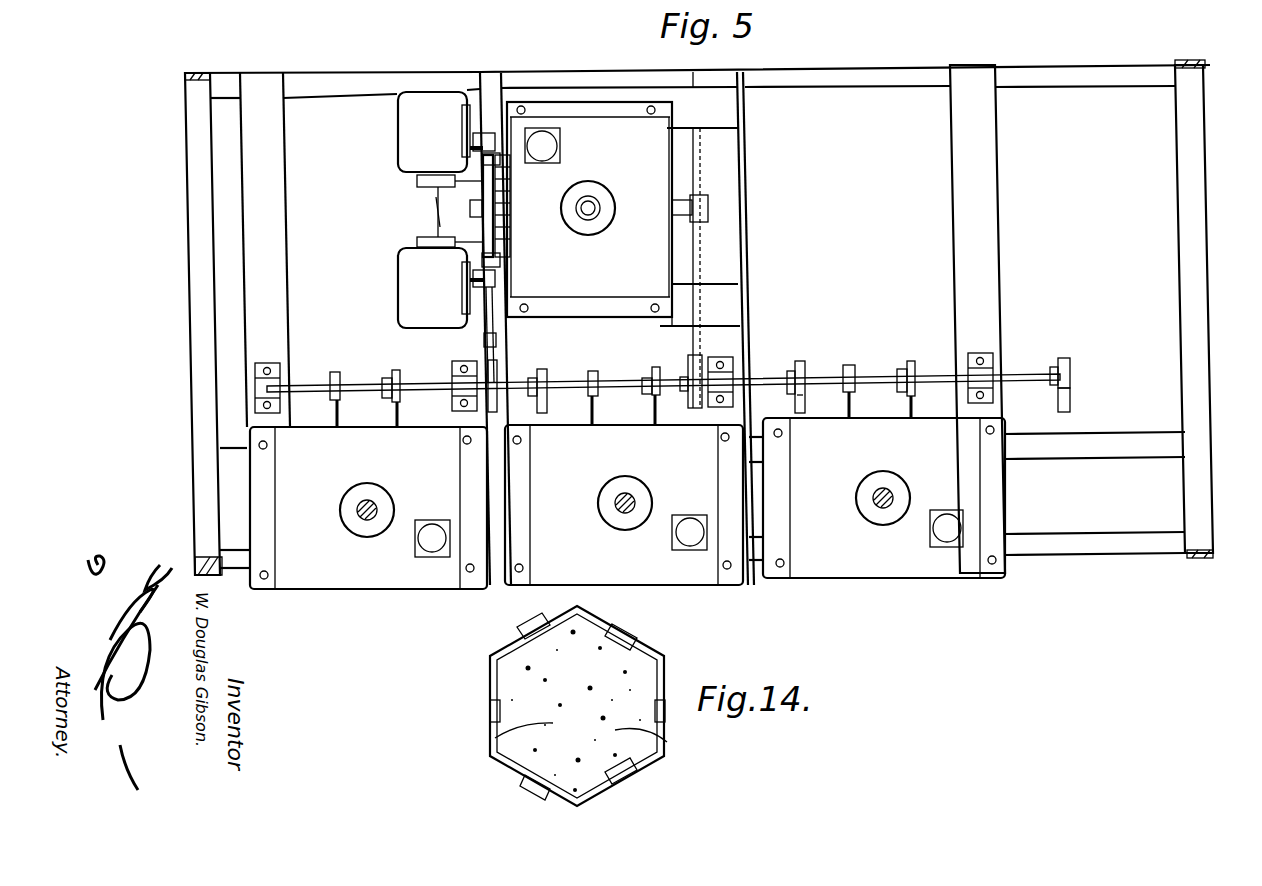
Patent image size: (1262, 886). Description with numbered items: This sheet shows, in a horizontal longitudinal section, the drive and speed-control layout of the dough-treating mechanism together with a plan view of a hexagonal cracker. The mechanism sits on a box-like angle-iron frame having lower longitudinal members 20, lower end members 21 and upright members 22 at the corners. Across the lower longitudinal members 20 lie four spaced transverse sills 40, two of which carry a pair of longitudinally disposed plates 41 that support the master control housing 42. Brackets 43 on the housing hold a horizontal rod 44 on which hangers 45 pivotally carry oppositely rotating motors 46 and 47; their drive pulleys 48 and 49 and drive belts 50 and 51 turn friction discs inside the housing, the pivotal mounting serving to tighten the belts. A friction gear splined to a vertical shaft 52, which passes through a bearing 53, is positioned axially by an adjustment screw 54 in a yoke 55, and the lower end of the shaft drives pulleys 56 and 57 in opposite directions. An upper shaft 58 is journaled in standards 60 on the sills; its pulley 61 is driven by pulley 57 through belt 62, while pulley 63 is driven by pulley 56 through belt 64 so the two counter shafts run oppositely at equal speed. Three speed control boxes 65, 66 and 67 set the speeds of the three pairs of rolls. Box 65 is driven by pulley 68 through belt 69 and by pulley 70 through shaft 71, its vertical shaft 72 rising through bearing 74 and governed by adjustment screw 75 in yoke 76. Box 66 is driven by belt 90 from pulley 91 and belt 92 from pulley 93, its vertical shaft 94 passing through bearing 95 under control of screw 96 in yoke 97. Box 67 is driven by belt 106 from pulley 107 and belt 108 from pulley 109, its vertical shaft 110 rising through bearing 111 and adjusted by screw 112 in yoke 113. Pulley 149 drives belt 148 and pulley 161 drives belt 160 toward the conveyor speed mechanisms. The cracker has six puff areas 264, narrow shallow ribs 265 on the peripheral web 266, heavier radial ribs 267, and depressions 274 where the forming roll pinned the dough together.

In FIG. 5, the lower longitudinal members 20 is at (1078, 84).
In FIG. 5, the lower end members 21 is at (195, 305).
In FIG. 5, the upright members 22 is at (183, 88).
In FIG. 5, the transverse sills 40 is at (283, 151).
In FIG. 5, the plates 41 is at (738, 115).
In FIG. 5, the master control housing 42 is at (663, 124).
In FIG. 5, the brackets 43 is at (493, 155).
In FIG. 5, the horizontal rod 44 is at (496, 232).
In FIG. 5, the hangers 45 is at (483, 133).
In FIG. 5, the motor 46 is at (398, 128).
In FIG. 5, the motor 47 is at (398, 287).
In FIG. 5, the drive pulley 48 is at (417, 183).
In FIG. 5, the drive pulley 49 is at (418, 243).
In FIG. 5, the drive belt 50 is at (440, 192).
In FIG. 5, the drive belt 51 is at (438, 230).
In FIG. 5, the vertical shaft 52 is at (588, 196).
In FIG. 5, the bearing 53 is at (607, 200).
In FIG. 5, the adjustment screw 54 is at (560, 146).
In FIG. 5, the yoke 55 is at (553, 156).
In FIG. 5, the pulley 56 is at (470, 206).
In FIG. 5, the pulley 57 is at (700, 196).
In FIG. 5, the upper shaft 58 is at (302, 386).
In FIG. 5, the standards 60 is at (266, 363).
In FIG. 5, the pulley 61 is at (684, 364).
In FIG. 5, the belt 62 is at (699, 270).
In FIG. 5, the pulley 63 is at (498, 372).
In FIG. 5, the belt 64 is at (497, 340).
In FIG. 5, the speed control box 65 is at (354, 587).
In FIG. 5, the speed control box 66 is at (674, 584).
In FIG. 5, the speed control box 67 is at (874, 578).
In FIG. 5, the pulley 68 is at (387, 372).
In FIG. 5, the belt 69 is at (400, 416).
In FIG. 5, the pulley 70 is at (352, 358).
In FIG. 5, the shaft 71 is at (340, 413).
In FIG. 5, the vertical shaft 72 is at (368, 502).
In FIG. 5, the bearing 74 is at (380, 495).
In FIG. 5, the adjustment screw 75 is at (440, 522).
In FIG. 5, the yoke 76 is at (415, 549).
In FIG. 5, the belt 90 is at (652, 412).
In FIG. 5, the pulley 91 is at (644, 373).
In FIG. 5, the belt 92 is at (590, 412).
In FIG. 5, the pulley 93 is at (580, 374).
In FIG. 5, the vertical shaft 94 is at (630, 497).
In FIG. 5, the bearing 95 is at (615, 496).
In FIG. 5, the adjustment screw 96 is at (692, 520).
In FIG. 5, the yoke 97 is at (673, 535).
In FIG. 5, the belt 106 is at (914, 404).
In FIG. 5, the pulley 107 is at (915, 363).
In FIG. 5, the belt 108 is at (852, 408).
In FIG. 5, the pulley 109 is at (855, 368).
In FIG. 5, the vertical shaft 110 is at (888, 492).
In FIG. 5, the bearing 111 is at (875, 492).
In FIG. 5, the adjustment screw 112 is at (950, 516).
In FIG. 5, the yoke 113 is at (931, 538).
In FIG. 5, the belt 148 is at (796, 408).
In FIG. 5, the pulley 149 is at (820, 350).
In FIG. 5, the belt 160 is at (1070, 400).
In FIG. 5, the pulley 161 is at (1070, 372).
In FIG. 14, the puff areas 264 is at (630, 702).
In FIG. 14, the ribs 265 is at (540, 636).
In FIG. 14, the peripheral web 266 is at (618, 642).
In FIG. 14, the ribs 267 is at (580, 660).
In FIG. 14, the depressions 274 is at (492, 736).